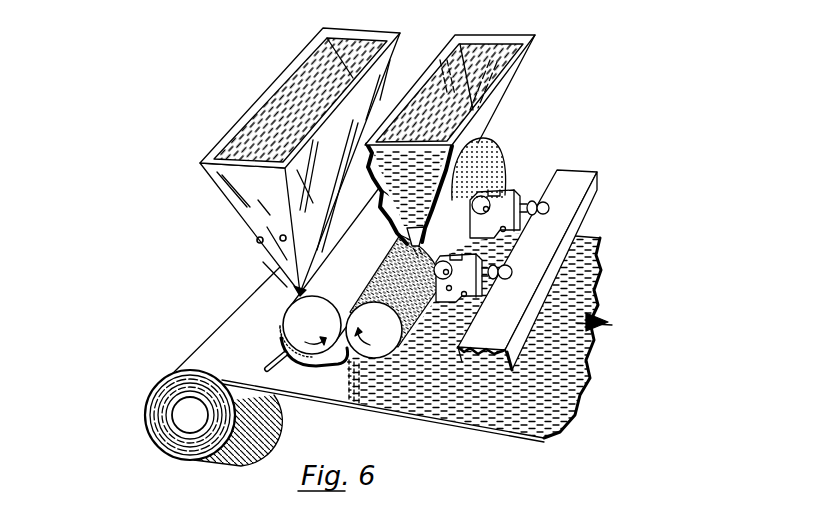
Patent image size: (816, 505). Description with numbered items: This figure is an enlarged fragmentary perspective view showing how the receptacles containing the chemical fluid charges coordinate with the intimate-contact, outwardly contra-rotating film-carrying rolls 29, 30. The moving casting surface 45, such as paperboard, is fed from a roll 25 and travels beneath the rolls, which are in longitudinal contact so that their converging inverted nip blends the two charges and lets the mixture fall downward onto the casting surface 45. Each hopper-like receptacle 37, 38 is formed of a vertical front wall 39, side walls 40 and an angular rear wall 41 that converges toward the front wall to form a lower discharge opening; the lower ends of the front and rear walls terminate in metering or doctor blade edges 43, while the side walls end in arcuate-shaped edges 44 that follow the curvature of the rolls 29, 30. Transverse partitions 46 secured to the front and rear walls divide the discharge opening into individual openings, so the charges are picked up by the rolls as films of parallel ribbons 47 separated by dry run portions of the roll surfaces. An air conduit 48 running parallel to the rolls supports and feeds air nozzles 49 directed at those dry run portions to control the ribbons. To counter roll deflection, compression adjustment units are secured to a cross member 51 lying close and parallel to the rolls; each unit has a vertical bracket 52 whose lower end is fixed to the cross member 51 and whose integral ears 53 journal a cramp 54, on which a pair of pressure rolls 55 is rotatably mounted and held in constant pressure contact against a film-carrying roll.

The roll 25 is at (150, 405).
The contra-rotating film-carrying roll 29 is at (352, 272).
The contra-rotating film-carrying roll 30 is at (394, 296).
The receptacle 37 is at (300, 98).
The receptacle 38 is at (528, 43).
The front wall 39 is at (393, 63).
The side walls 40 is at (247, 226).
The angular rear wall 41 is at (505, 108).
The metering or doctor blade edges 43 is at (420, 247).
The arcuate-shaped edges 44 is at (295, 297).
The casting surface 45 is at (327, 385).
The transverse partitions 46 is at (400, 233).
The films of parallel ribbons 47 is at (518, 157).
The air conduit 48 is at (277, 350).
The air nozzles 49 is at (303, 367).
The cross member 51 is at (575, 211).
The bracket 52 is at (522, 193).
The integral ears 53 is at (475, 292).
The cramp 54 is at (98, 504).
The pressure rolls 55 is at (16, 504).